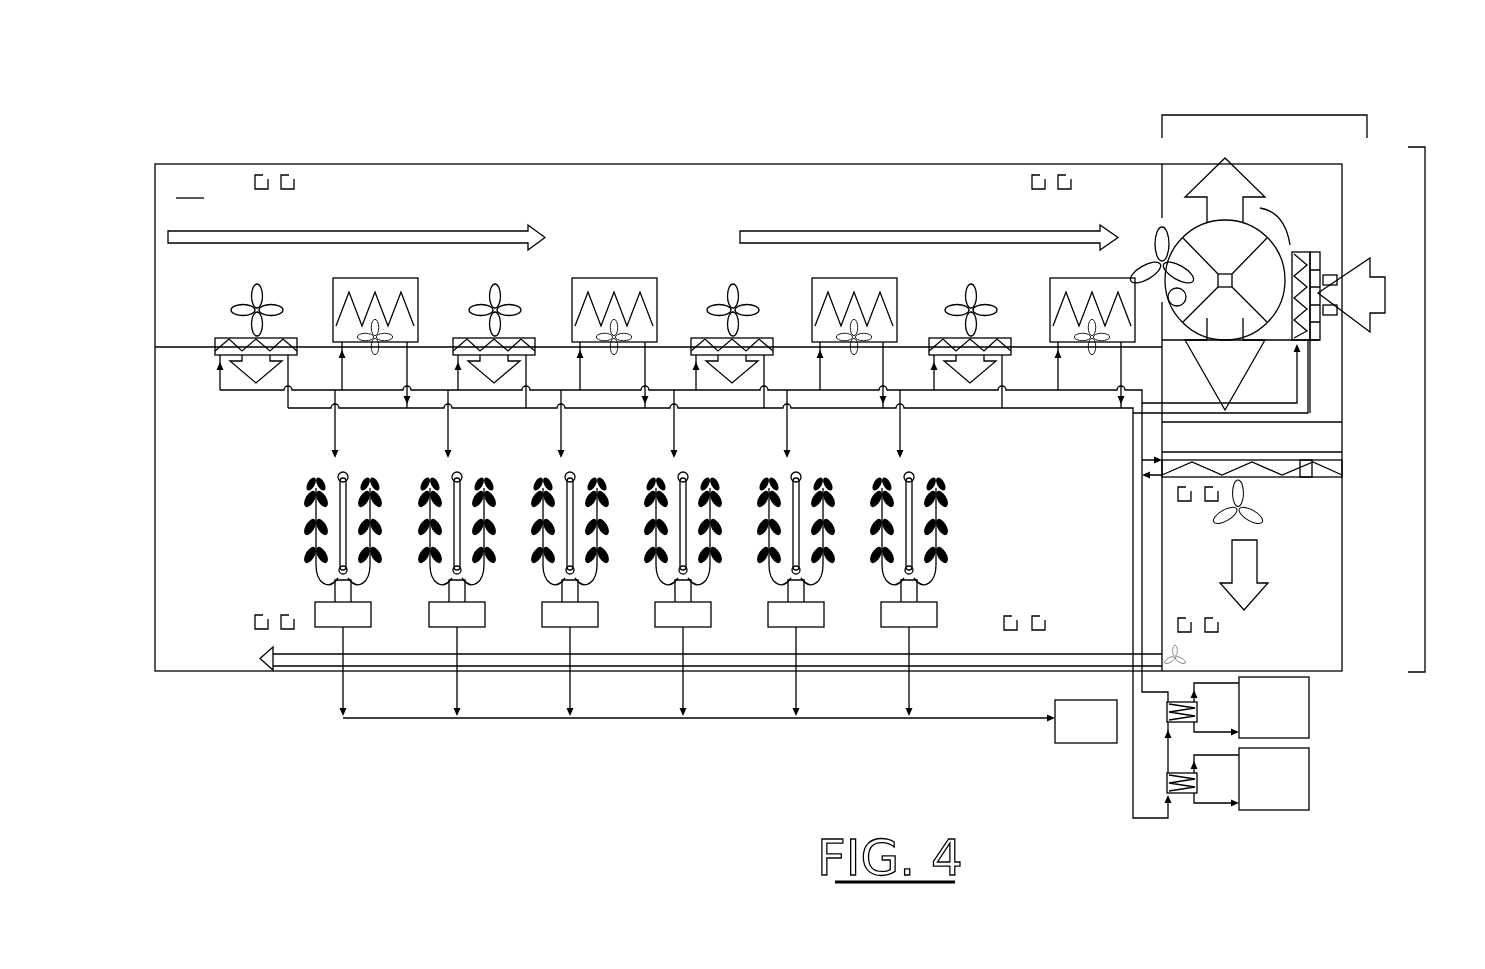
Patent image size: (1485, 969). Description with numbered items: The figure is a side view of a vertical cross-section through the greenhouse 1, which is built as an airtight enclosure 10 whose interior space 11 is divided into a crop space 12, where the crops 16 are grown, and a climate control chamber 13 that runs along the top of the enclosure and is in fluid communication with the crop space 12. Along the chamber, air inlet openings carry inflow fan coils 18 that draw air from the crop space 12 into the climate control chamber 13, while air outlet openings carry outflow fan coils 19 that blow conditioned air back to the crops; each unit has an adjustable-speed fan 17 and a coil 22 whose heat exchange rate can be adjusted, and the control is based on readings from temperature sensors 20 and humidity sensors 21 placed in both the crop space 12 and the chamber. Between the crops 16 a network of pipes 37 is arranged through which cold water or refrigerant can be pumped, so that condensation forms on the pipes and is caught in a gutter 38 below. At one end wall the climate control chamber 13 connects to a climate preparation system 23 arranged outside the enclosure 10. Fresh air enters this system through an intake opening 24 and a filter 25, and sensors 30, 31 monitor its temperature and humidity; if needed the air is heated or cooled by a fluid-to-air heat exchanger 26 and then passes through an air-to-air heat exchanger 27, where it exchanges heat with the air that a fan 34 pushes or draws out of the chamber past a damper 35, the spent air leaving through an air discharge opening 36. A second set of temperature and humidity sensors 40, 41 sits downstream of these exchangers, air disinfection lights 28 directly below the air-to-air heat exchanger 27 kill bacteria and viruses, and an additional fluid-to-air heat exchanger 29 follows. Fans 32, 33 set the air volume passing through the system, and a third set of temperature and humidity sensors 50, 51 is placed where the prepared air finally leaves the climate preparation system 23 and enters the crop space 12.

The greenhouse 1 is at (726, 148).
The airtight enclosure 10 is at (456, 140).
The interior space 11 is at (658, 258).
The crop space 12 is at (172, 450).
The climate control chamber 13 is at (180, 285).
The crops 16 is at (315, 490).
The fan 17 is at (512, 307).
The inflow fan coil 18 is at (408, 258).
The outflow fan coil 19 is at (495, 255).
The temperature sensor 20 is at (260, 174).
The humidity sensor 21 is at (287, 174).
The coil 22 is at (220, 345).
The climate preparation system 23 is at (1265, 113).
The intake opening 24 is at (1348, 250).
The filter 25 is at (1317, 330).
The fluid-to-air heat exchanger 26 is at (1303, 263).
The air-to-air heat exchanger 27 is at (1223, 287).
The air disinfection lights 28 is at (1325, 438).
The additional fluid-to-air heat exchanger 29 is at (1306, 477).
The sensor 30 is at (1332, 280).
The sensor 31 is at (1347, 312).
The fan 32 is at (1255, 498).
The fan 33 is at (1187, 657).
The fan 34 is at (1155, 262).
The damper 35 is at (1177, 297).
The air discharge opening 36 is at (1242, 172).
The network of pipes 37 is at (913, 477).
The gutter 38 is at (343, 580).
The temperature sensor 40 is at (1185, 502).
The humidity sensor 41 is at (1212, 502).
The temperature sensor 50 is at (1183, 618).
The humidity sensor 51 is at (1218, 625).